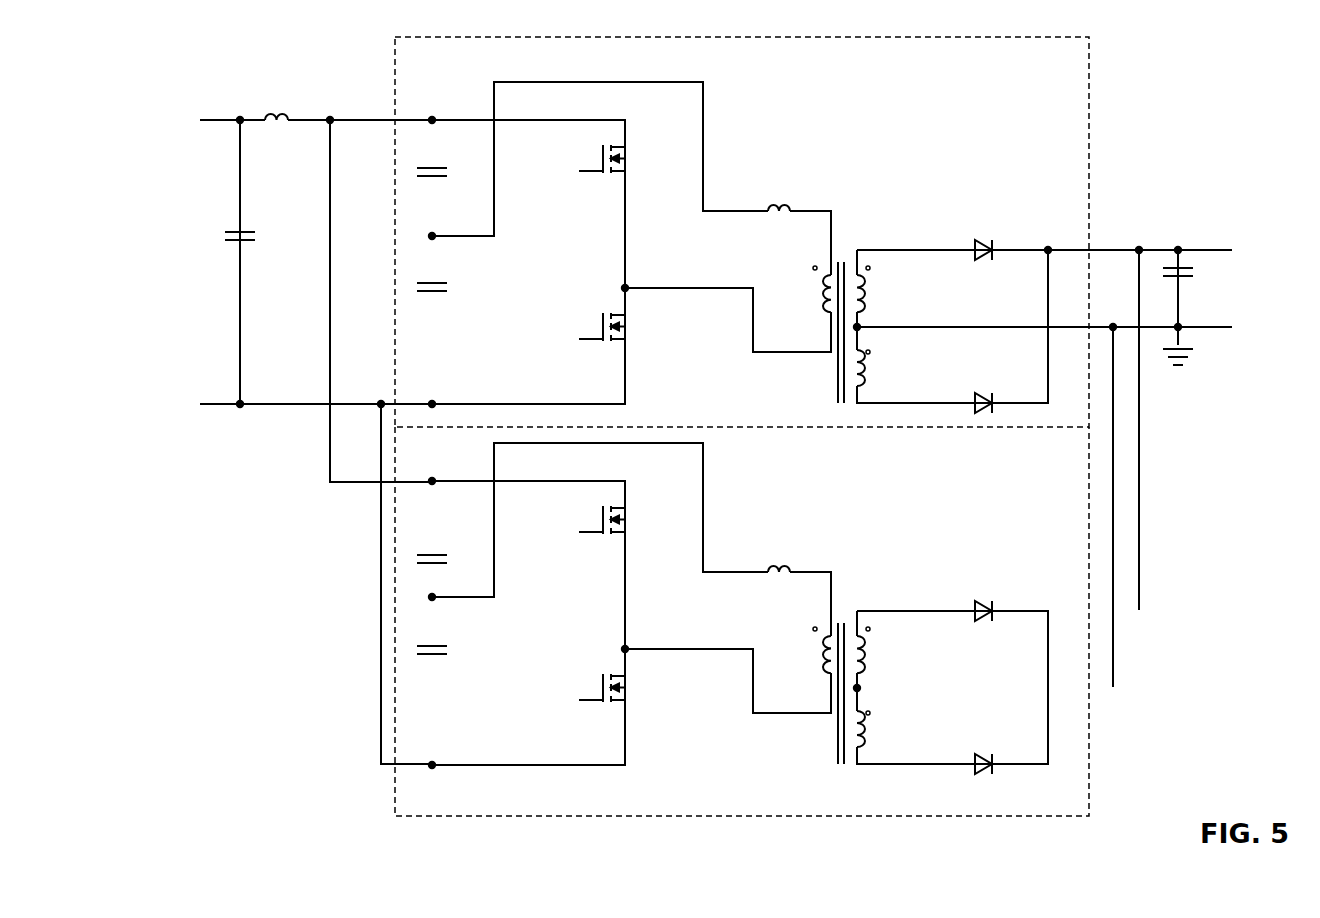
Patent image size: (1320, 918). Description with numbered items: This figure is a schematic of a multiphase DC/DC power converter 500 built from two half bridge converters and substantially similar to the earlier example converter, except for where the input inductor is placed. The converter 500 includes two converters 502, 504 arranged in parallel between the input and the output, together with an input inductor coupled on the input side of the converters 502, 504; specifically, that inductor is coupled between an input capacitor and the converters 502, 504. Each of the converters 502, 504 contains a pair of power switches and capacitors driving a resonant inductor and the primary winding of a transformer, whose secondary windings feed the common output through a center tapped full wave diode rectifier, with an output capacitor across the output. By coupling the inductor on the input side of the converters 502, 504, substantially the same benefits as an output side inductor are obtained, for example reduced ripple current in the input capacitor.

The multiphase DC/DC power converter 500 is at (231, 38).
The converter 502 is at (1089, 94).
The converter 504 is at (1089, 751).